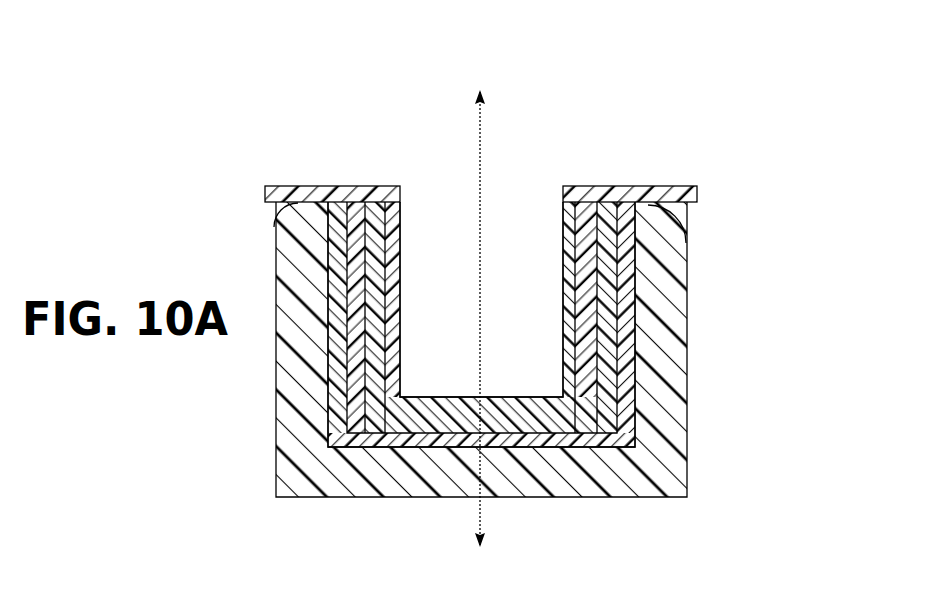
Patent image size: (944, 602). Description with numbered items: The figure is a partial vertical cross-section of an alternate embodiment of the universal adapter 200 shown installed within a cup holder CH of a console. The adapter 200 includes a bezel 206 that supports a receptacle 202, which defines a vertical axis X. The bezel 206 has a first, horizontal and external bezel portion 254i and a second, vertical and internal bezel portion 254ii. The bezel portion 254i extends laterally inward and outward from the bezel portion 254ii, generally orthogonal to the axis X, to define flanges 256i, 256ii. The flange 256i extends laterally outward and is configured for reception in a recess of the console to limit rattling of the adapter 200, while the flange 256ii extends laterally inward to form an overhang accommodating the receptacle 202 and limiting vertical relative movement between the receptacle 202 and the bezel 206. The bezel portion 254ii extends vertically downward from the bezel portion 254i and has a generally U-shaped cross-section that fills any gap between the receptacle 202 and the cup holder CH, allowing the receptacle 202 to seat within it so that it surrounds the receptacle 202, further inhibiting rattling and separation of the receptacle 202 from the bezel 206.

The adapter 200 is at (527, 102).
The receptacle 202 is at (406, 230).
The bezel 206 is at (683, 157).
The first bezel portion 254i is at (626, 183).
The second bezel portion 254ii is at (640, 333).
The flange 256i is at (274, 227).
The flange 256ii is at (378, 203).
The cup holder CH is at (690, 442).